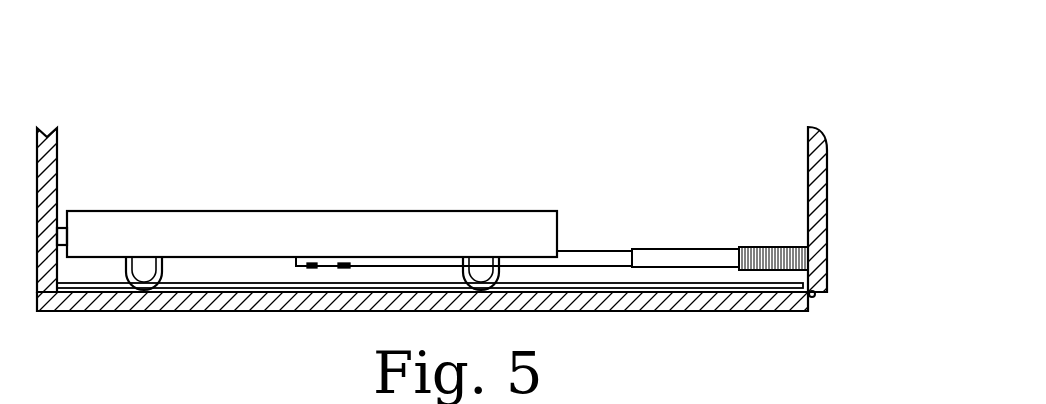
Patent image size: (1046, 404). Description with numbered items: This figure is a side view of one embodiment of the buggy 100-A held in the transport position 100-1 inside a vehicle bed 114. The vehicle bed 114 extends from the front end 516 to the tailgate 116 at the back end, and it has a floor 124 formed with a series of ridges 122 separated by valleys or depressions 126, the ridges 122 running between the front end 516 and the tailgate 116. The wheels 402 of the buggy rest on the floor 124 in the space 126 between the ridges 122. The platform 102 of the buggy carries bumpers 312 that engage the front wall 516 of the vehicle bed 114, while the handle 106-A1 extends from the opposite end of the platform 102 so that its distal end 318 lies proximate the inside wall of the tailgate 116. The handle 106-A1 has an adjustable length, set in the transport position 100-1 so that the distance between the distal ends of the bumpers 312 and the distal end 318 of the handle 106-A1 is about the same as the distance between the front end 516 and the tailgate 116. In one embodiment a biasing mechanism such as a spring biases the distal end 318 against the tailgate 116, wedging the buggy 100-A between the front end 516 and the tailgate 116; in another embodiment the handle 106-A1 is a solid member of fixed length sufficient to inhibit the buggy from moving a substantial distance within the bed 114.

The transport position 100-1 is at (793, 79).
The buggy 100-A is at (252, 211).
The platform 102 is at (368, 211).
The handle 106-A1 is at (720, 248).
The vehicle bed 114 is at (748, 311).
The tailgate 116 is at (828, 183).
The ridges 122 is at (613, 285).
The floor 124 is at (717, 285).
The valleys 126 is at (673, 292).
The bumpers 312 is at (63, 227).
The distal end of the handle 318 is at (810, 260).
The wheels 402 is at (165, 272).
The front end 516 is at (58, 143).